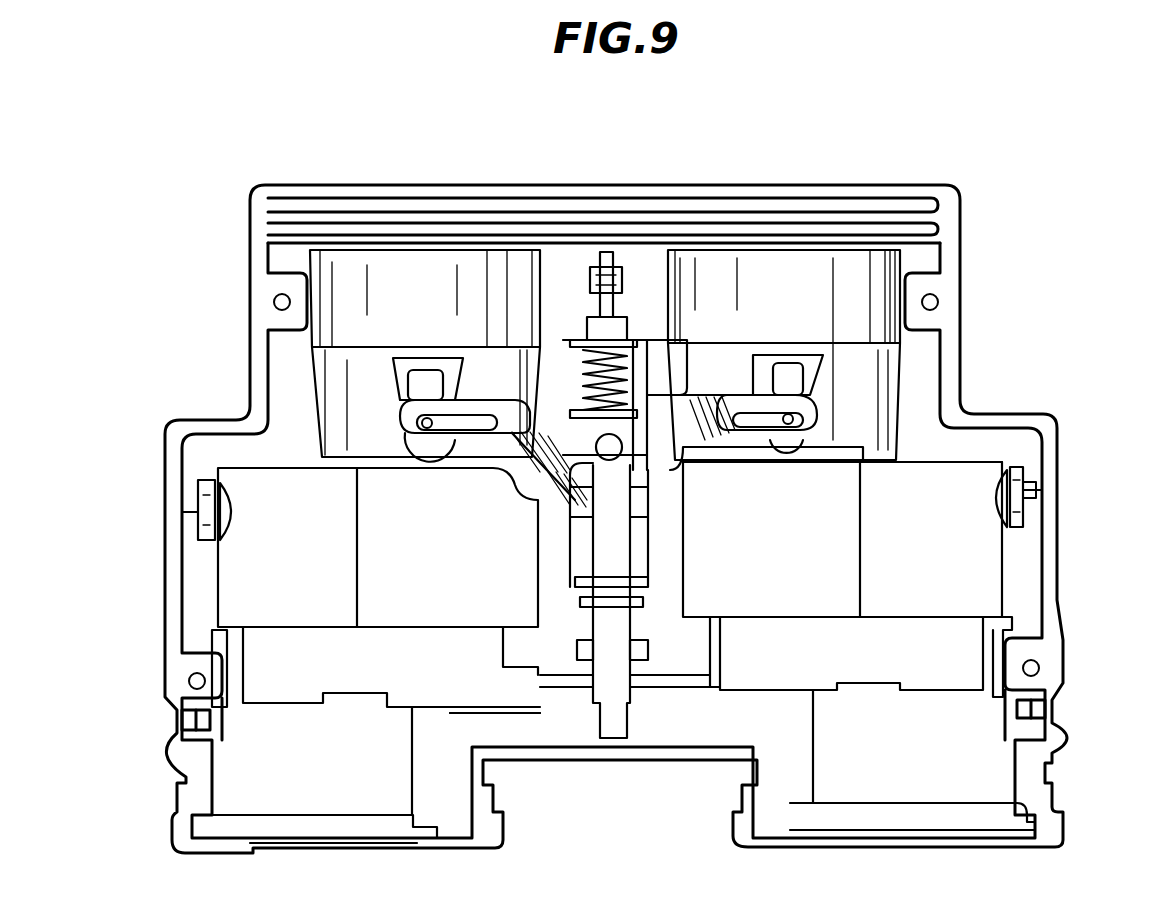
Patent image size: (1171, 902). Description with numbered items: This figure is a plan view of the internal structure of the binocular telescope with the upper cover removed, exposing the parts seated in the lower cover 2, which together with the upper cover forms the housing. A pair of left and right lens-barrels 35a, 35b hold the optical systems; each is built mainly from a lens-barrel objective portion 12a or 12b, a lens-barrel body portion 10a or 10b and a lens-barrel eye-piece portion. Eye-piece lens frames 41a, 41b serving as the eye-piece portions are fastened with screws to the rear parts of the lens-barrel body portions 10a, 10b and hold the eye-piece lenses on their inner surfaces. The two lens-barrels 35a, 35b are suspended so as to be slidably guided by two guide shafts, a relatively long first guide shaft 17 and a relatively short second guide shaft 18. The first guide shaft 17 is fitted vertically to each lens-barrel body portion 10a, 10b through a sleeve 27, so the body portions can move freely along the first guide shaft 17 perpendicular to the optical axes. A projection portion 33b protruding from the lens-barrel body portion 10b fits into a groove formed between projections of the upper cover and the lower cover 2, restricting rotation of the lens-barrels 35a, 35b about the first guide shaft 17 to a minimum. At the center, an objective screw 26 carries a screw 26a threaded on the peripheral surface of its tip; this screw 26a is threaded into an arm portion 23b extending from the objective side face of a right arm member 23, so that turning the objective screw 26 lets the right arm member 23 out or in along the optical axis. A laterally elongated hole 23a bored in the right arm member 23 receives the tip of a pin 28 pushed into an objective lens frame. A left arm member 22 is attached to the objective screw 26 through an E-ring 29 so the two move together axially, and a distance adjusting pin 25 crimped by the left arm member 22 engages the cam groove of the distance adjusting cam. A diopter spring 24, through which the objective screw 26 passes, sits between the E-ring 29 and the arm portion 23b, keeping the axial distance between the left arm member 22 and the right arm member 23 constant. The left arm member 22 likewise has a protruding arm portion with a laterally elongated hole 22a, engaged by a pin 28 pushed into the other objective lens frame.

The lower cover 2 is at (953, 264).
The lens-barrel body portion 10a is at (977, 584).
The lens-barrel body portion 10b is at (235, 600).
The lens-barrel objective portion 12a is at (880, 330).
The lens-barrel objective portion 12b is at (330, 333).
The first guide shaft 17 is at (1032, 493).
The second guide shaft 18 is at (667, 683).
The left arm member 22 is at (527, 427).
The laterally elongated hole 22a is at (470, 420).
The right arm member 23 is at (830, 428).
The laterally elongated hole 23a is at (825, 440).
The arm portion 23b is at (612, 440).
The diopter spring 24 is at (630, 390).
The distance adjusting pin 25 is at (650, 410).
The objective screw 26 is at (614, 722).
The screw 26a is at (597, 323).
The sleeve 27 is at (210, 483).
The pin 28 is at (425, 418).
The E-ring 29 is at (705, 445).
The projection portion 33b is at (512, 707).
The lens-barrel 35a is at (983, 555).
The lens-barrel 35b is at (232, 562).
The eye-piece lens frame 41a is at (1000, 821).
The eye-piece lens frame 41b is at (215, 830).